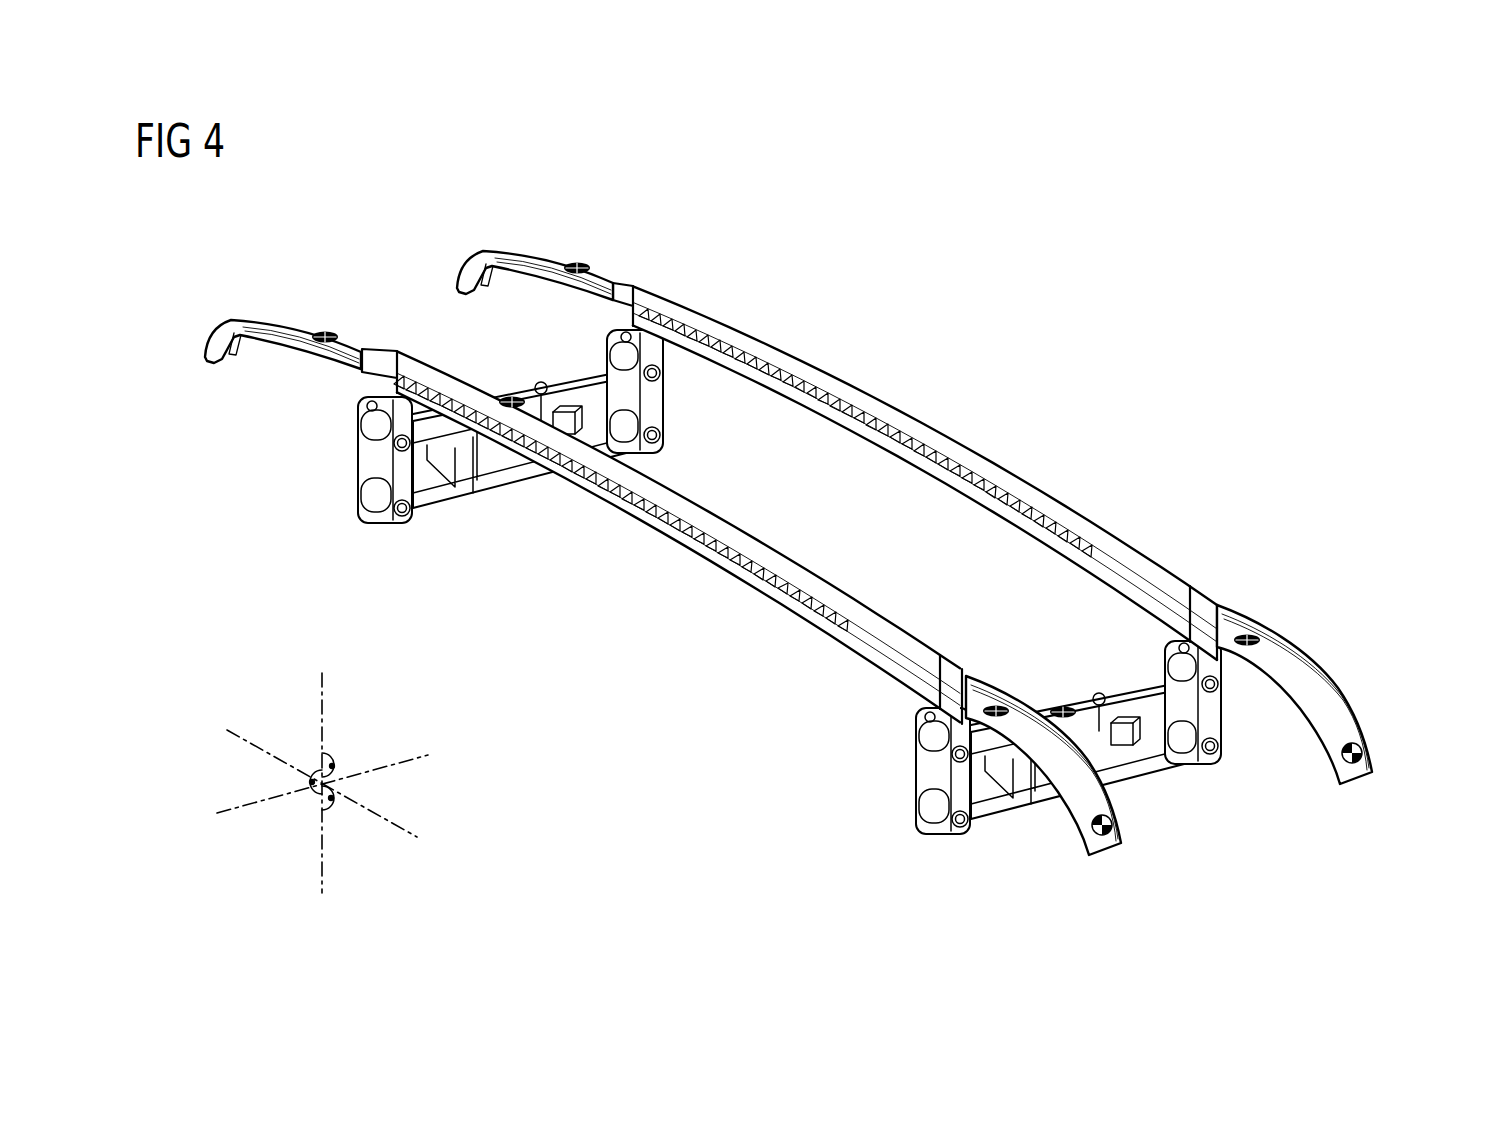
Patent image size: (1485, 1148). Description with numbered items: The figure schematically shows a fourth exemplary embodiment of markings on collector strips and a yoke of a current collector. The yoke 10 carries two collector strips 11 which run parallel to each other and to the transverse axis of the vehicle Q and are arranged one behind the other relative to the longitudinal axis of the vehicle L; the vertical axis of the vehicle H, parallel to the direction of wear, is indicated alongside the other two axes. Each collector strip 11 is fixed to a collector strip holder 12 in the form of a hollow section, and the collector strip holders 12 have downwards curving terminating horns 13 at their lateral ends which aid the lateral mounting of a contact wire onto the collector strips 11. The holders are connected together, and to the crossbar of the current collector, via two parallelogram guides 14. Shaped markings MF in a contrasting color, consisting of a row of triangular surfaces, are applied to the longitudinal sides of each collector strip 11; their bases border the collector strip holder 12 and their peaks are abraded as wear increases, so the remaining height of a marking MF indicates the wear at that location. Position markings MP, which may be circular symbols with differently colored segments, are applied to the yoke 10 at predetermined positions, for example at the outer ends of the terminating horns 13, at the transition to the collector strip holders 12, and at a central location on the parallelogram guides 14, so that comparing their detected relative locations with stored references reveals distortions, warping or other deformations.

The yoke 10 is at (936, 283).
The collector strip 11 is at (938, 438).
The collector strip holder 12 is at (1102, 574).
The terminating horn 13 is at (531, 256).
The parallelogram guide 14 is at (488, 462).
The position marking MP is at (1400, 770).
The shaped marking MF is at (710, 543).
The transverse axis of the vehicle Q is at (235, 735).
The vertical axis of the vehicle H is at (323, 690).
The longitudinal axis of the vehicle L is at (223, 807).